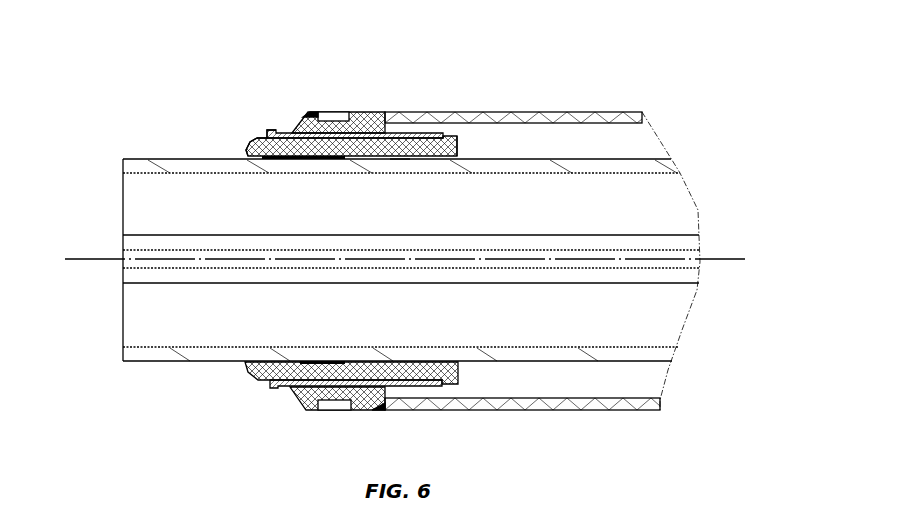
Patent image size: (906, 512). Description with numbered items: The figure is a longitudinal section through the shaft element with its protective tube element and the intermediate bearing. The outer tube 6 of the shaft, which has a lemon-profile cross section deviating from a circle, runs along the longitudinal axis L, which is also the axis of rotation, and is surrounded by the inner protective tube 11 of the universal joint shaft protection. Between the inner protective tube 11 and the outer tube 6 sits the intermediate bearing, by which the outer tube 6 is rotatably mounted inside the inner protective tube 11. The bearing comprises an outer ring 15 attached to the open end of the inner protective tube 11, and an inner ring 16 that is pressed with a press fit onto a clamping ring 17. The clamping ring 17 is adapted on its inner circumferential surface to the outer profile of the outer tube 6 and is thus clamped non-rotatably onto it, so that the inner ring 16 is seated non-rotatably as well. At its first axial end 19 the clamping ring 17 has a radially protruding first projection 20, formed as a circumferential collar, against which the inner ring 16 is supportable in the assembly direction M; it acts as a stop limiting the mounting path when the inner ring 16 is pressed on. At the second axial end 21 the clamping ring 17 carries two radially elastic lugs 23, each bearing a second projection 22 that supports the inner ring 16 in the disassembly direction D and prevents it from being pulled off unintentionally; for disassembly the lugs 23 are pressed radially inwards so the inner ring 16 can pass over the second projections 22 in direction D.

The outer tube 6 is at (137, 327).
The inner protective tube 11 is at (605, 112).
The outer ring 15 is at (362, 116).
The inner ring 16 is at (394, 133).
The clamping ring 17 is at (400, 170).
The first axial end 19 is at (468, 150).
The first projection 20 is at (452, 136).
The second axial end 21 is at (238, 150).
The second projection 22 is at (262, 132).
The radially elastic lug 23 is at (302, 160).
The disassembly direction D is at (182, 138).
The assembly direction M is at (523, 138).
The longitudinal axis L is at (725, 260).